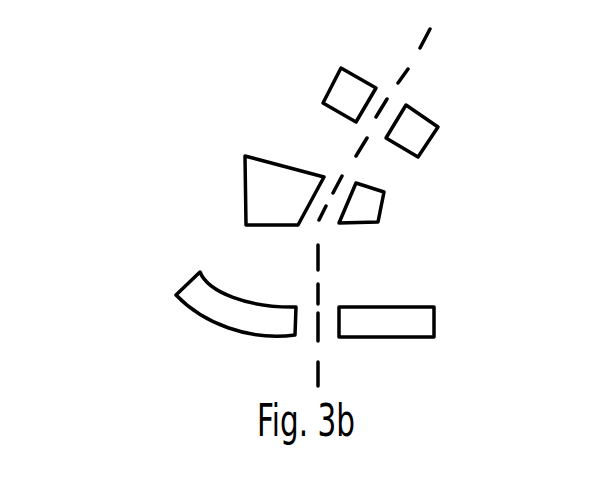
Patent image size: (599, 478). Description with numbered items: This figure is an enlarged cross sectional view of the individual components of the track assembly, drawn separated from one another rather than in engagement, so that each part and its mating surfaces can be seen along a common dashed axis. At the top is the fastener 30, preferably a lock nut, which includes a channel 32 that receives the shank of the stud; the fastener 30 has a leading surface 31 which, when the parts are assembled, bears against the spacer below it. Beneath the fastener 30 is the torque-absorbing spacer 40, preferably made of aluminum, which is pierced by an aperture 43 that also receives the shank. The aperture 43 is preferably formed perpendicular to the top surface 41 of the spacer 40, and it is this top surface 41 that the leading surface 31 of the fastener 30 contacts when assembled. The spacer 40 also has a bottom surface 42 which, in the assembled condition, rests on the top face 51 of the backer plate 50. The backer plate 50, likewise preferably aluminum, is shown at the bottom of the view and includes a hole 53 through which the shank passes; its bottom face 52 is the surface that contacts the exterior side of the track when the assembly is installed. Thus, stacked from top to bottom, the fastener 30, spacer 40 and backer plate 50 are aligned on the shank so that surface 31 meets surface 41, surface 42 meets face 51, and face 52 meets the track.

The fastener 30 is at (333, 60).
The leading surface 31 is at (407, 149).
The channel 32 is at (383, 102).
The torque-absorbing spacer 40 is at (238, 162).
The top surface 41 is at (255, 149).
The bottom surface 42 is at (252, 220).
The aperture 43 is at (333, 214).
The backer plate 50 is at (167, 287).
The top face 51 is at (204, 273).
The bottom face 52 is at (181, 310).
The hole 53 is at (322, 314).